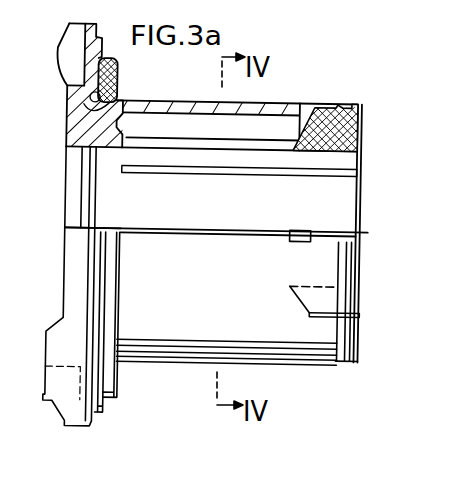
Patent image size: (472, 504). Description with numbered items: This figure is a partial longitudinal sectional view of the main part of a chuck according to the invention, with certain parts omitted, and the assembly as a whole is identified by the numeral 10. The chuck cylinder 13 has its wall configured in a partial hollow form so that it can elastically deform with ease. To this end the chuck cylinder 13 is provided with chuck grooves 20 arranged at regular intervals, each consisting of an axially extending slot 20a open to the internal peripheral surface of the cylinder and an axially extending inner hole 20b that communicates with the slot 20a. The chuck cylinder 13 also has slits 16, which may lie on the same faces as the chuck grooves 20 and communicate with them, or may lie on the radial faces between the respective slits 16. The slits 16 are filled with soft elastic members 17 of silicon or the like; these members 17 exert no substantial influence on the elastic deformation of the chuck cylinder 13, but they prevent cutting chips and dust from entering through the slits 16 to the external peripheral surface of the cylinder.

The housing 10 is at (118, 93).
The chuck cylinder 13 is at (301, 333).
The slits 16 is at (346, 150).
The soft elastic members 17 is at (321, 118).
The chuck grooves 20 is at (292, 198).
The slots 20a is at (275, 137).
The inner holes 20b is at (215, 128).